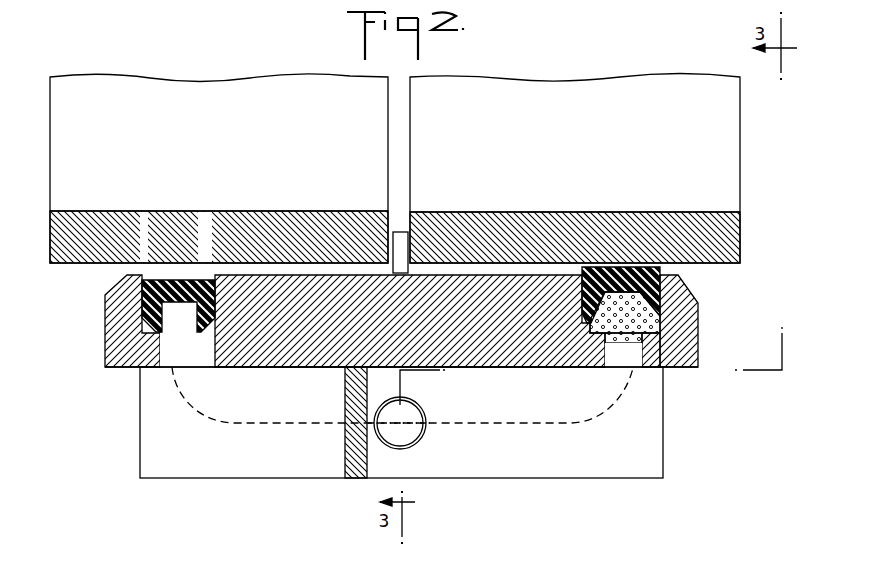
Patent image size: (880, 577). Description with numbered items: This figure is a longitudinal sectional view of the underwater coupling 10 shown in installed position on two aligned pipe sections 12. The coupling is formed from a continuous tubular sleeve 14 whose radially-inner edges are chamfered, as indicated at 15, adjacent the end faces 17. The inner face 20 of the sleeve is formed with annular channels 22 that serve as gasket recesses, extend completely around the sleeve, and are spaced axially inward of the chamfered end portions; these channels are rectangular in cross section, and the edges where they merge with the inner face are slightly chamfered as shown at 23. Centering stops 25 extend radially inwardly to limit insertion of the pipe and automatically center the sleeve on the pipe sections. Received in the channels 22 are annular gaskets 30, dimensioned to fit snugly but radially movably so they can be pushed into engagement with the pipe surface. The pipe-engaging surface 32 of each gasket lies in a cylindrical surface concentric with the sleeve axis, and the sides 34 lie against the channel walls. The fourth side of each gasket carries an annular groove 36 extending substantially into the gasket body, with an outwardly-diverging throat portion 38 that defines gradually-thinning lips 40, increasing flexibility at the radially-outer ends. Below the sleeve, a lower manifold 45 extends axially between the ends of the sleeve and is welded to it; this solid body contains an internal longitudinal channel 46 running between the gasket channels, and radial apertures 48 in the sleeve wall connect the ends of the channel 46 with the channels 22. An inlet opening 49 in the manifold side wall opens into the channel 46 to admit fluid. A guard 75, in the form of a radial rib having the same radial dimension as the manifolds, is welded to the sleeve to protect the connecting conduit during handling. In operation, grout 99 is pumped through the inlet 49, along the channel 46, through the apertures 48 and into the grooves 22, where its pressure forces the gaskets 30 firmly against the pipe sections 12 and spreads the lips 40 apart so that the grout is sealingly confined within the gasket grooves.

The underwater coupling 10 is at (703, 306).
The pipe sections 12 is at (328, 222).
The tubular sleeve 14 is at (700, 330).
The chamfer 15 is at (105, 289).
The end faces 17 is at (105, 334).
The inner face 20 is at (260, 280).
The annular channels 22 is at (175, 284).
The chamfered channel edges 23 is at (145, 270).
The centering stops 25 is at (402, 230).
The gaskets 30 is at (140, 334).
The pipe-engaging surface 32 is at (199, 284).
The gasket sides 34 is at (560, 262).
The annular groove 36 is at (178, 368).
The throat portion 38 is at (198, 346).
The lips 40 is at (229, 314).
The lower manifold 45 is at (228, 465).
The longitudinal channel 46 is at (494, 405).
The radial apertures 48 is at (143, 372).
The inlet opening 49 is at (416, 437).
The guard 75 is at (345, 456).
The grout 99 is at (640, 340).